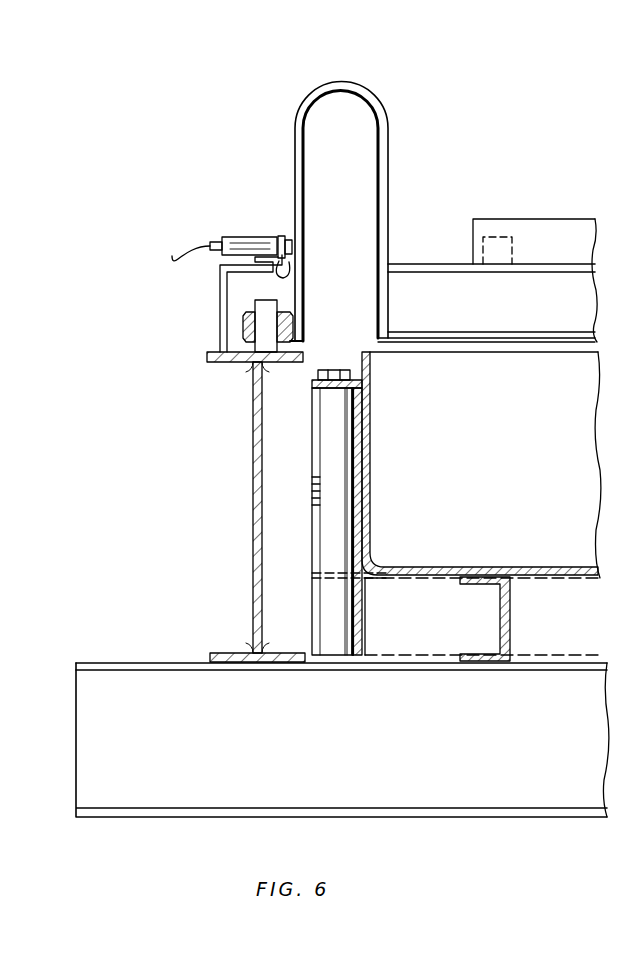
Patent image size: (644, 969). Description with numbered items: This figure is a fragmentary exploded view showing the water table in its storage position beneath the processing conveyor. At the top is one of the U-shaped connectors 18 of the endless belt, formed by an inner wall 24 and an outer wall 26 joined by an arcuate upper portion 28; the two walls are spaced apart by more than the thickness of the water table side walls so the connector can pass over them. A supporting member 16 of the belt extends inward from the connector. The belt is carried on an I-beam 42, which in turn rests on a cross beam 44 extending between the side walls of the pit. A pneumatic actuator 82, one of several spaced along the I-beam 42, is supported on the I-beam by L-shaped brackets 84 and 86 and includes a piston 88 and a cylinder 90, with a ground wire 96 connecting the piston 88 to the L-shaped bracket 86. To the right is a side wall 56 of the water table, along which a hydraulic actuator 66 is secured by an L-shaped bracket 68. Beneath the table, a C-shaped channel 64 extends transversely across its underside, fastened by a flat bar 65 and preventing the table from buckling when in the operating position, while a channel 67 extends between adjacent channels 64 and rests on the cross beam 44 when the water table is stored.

The supporting member 16 is at (545, 200).
The U-shaped connector 18 is at (345, 79).
The inner wall 24 is at (386, 160).
The outer wall 26 is at (296, 155).
The arcuate upper portion 28 is at (347, 96).
The I-beam 42 is at (254, 471).
The cross beam 44 is at (382, 733).
The side wall 56 is at (373, 469).
The C-shaped channel 64 is at (574, 623).
The flat bar 65 is at (312, 408).
The hydraulic actuator 66 is at (337, 503).
The channel 67 is at (500, 620).
The L-shaped bracket 68 is at (366, 428).
The pneumatic actuator 82 is at (260, 235).
The L-shaped bracket 84 is at (292, 256).
The L-shaped bracket 86 is at (220, 318).
The piston 88 is at (285, 240).
The cylinder 90 is at (258, 237).
The ground wire 96 is at (290, 269).